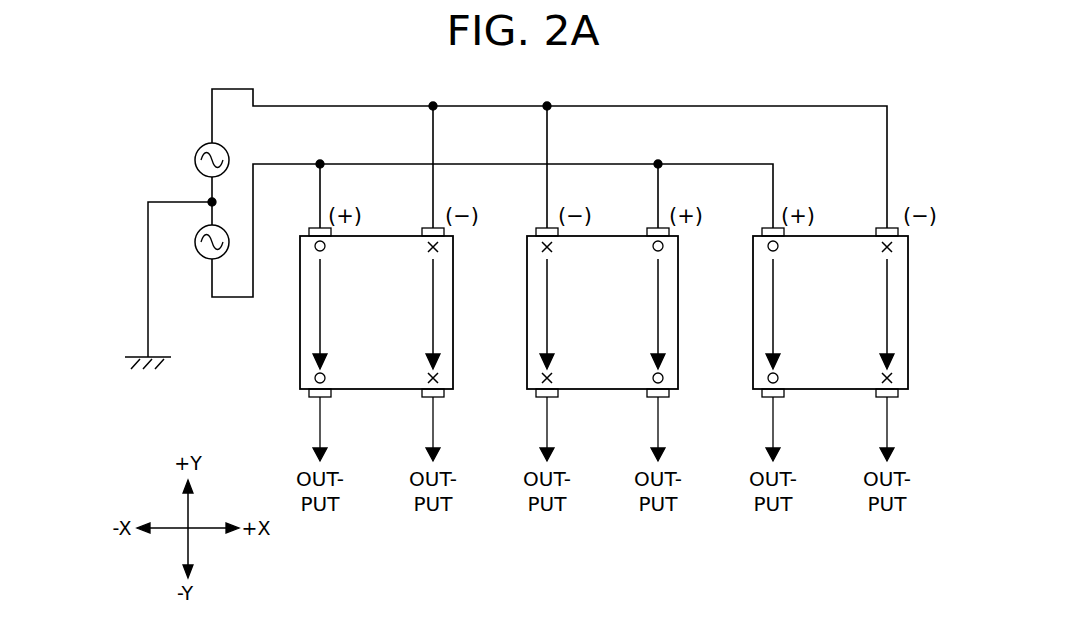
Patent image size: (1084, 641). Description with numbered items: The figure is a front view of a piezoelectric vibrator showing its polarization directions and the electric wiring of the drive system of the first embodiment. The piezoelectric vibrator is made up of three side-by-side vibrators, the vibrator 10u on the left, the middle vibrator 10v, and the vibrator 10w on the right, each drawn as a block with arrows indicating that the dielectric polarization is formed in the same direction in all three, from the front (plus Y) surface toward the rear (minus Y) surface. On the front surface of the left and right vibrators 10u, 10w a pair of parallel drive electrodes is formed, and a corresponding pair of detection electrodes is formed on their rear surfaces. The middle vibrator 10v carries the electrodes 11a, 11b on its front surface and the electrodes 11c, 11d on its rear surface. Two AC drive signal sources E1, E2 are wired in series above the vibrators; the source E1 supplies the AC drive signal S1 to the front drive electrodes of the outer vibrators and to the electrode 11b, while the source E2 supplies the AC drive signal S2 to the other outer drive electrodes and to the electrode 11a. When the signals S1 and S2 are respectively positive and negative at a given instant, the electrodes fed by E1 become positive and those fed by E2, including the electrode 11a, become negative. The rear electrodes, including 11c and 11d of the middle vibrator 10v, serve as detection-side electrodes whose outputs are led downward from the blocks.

The vibrator 10u is at (300, 330).
The middle vibrator 10v is at (527, 330).
The vibrator 10w is at (753, 330).
The electrode 11a is at (538, 228).
The electrode 11b is at (649, 228).
The electrode 11c is at (537, 398).
The electrode 11d is at (650, 398).
The AC drive signal source E1 is at (197, 242).
The AC drive signal source E2 is at (197, 160).
The AC drive signal S1 is at (492, 246).
The AC drive signal S2 is at (549, 146).